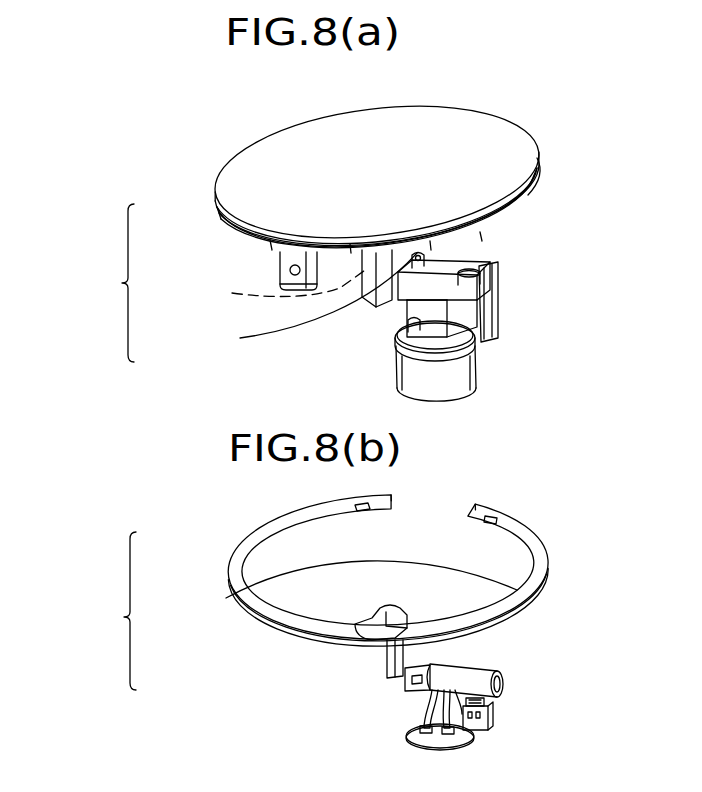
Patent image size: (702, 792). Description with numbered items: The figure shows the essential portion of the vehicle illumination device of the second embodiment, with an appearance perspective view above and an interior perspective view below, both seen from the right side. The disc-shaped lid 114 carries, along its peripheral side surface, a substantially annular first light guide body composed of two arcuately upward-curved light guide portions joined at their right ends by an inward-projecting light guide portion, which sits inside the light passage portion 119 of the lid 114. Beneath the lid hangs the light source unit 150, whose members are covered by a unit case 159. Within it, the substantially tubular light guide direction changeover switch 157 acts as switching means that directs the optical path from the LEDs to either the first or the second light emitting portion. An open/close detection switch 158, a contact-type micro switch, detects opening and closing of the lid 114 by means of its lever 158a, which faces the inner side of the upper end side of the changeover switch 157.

The lid 114 is at (436, 118).
The light passage portion 119 is at (377, 292).
The light source unit 150 is at (509, 288).
The unit case 159 is at (498, 321).
The light guide direction changeover switch 157 is at (468, 665).
The open/close detection switch 158 is at (492, 717).
The lever 158a is at (488, 702).